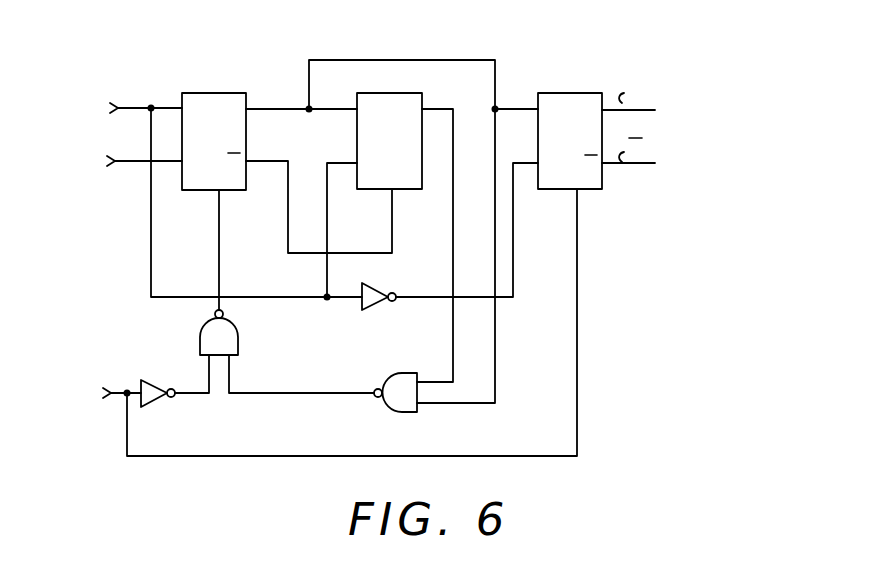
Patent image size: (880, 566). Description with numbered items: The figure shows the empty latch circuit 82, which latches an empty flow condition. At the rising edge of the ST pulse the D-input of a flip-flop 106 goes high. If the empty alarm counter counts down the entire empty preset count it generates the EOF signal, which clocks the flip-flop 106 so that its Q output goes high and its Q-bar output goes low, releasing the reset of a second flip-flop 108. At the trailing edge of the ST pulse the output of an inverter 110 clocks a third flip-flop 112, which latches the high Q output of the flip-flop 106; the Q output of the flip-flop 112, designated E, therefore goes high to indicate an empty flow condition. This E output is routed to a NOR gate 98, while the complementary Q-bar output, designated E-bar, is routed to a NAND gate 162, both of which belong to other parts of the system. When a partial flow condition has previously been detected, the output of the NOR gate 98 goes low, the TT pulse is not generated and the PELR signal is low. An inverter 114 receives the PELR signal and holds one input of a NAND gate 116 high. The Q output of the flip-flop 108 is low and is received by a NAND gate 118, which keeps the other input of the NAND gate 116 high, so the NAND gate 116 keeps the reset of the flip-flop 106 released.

The empty latch circuit 82 is at (238, 41).
The flip-flop 106 is at (219, 93).
The flip-flop 108 is at (389, 93).
The inverter 110 is at (373, 310).
The flip-flop 112 is at (563, 93).
The inverter 114 is at (158, 379).
The NAND gate 116 is at (238, 341).
The NAND gate 118 is at (400, 413).
The NOR gate 98 is at (684, 103).
The NAND gate 162 is at (696, 166).